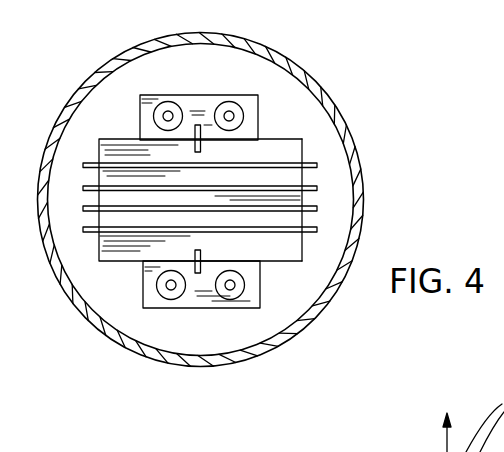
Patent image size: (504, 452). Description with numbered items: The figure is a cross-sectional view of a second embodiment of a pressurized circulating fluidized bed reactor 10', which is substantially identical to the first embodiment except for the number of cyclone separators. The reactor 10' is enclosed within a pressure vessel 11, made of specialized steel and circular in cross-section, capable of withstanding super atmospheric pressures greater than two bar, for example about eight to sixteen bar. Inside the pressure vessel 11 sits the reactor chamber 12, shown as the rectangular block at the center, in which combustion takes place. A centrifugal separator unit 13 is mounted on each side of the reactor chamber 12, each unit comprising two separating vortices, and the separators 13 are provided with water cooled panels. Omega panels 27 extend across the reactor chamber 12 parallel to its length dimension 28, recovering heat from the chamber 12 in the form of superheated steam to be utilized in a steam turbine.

The reactor 10' is at (236, 189).
The pressure vessel 11 is at (362, 183).
The reactor chamber 12 is at (94, 246).
The centrifugal separator 13 is at (238, 88).
The omega panels 27 is at (88, 183).
The length dimension 28 is at (289, 262).